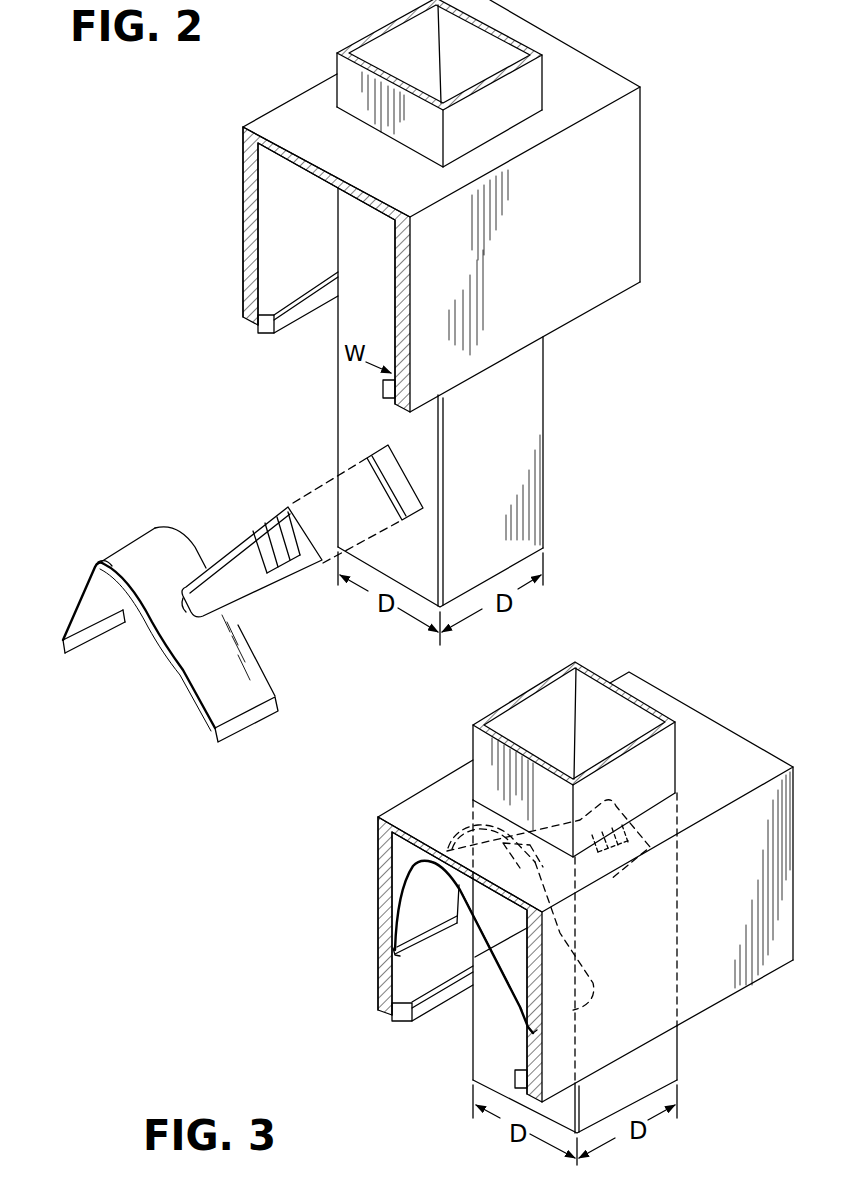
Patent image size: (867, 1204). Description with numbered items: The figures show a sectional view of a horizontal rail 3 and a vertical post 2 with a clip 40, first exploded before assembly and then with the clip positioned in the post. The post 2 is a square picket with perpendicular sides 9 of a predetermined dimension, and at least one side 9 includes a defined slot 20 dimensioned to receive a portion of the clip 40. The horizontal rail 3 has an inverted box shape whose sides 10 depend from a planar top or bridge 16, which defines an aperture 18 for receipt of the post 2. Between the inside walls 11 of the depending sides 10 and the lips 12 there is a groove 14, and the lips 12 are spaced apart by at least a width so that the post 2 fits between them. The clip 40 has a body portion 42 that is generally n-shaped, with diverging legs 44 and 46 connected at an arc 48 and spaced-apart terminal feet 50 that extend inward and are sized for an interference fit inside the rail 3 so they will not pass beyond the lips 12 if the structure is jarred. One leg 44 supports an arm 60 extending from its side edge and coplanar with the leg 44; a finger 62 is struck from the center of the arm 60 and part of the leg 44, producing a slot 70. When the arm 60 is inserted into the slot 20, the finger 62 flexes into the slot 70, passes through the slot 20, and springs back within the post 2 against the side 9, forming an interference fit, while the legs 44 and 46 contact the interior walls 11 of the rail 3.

In FIG. 2, the post 2 is at (559, 450).
In FIG. 3, the post 2 is at (681, 1052).
In FIG. 2, the horizontal rail 3 is at (656, 127).
In FIG. 3, the horizontal rail 3 is at (397, 803).
In FIG. 2, the sides 9 is at (497, 463).
In FIG. 3, the sides 9 is at (636, 1098).
In FIG. 2, the sides 10 is at (243, 202).
In FIG. 3, the sides 10 is at (778, 925).
In FIG. 2, the inside walls 11 is at (310, 239).
In FIG. 3, the inside walls 11 is at (449, 971).
In FIG. 2, the lips 12 is at (287, 332).
In FIG. 3, the lips 12 is at (413, 1017).
In FIG. 2, the groove 14 is at (272, 326).
In FIG. 3, the groove 14 is at (398, 1003).
In FIG. 2, the planar top or bridge 16 is at (370, 170).
In FIG. 3, the planar top or bridge 16 is at (735, 780).
In FIG. 2, the aperture 18 is at (549, 105).
In FIG. 3, the aperture 18 is at (470, 800).
In FIG. 2, the slot 20 is at (411, 497).
In FIG. 2, the clip 40 is at (113, 528).
In FIG. 3, the clip 40 is at (465, 929).
In FIG. 2, the body portion 42 is at (64, 594).
In FIG. 2, the leg 44 is at (207, 716).
In FIG. 3, the leg 44 is at (520, 978).
In FIG. 2, the leg 46 is at (86, 617).
In FIG. 3, the leg 46 is at (417, 905).
In FIG. 2, the arc 48 is at (160, 535).
In FIG. 2, the terminal feet 50 is at (107, 637).
In FIG. 3, the terminal feet 50 is at (418, 960).
In FIG. 2, the arm 60 is at (240, 537).
In FIG. 3, the arm 60 is at (613, 890).
In FIG. 2, the finger 62 is at (250, 578).
In FIG. 2, the slot 70 is at (188, 606).